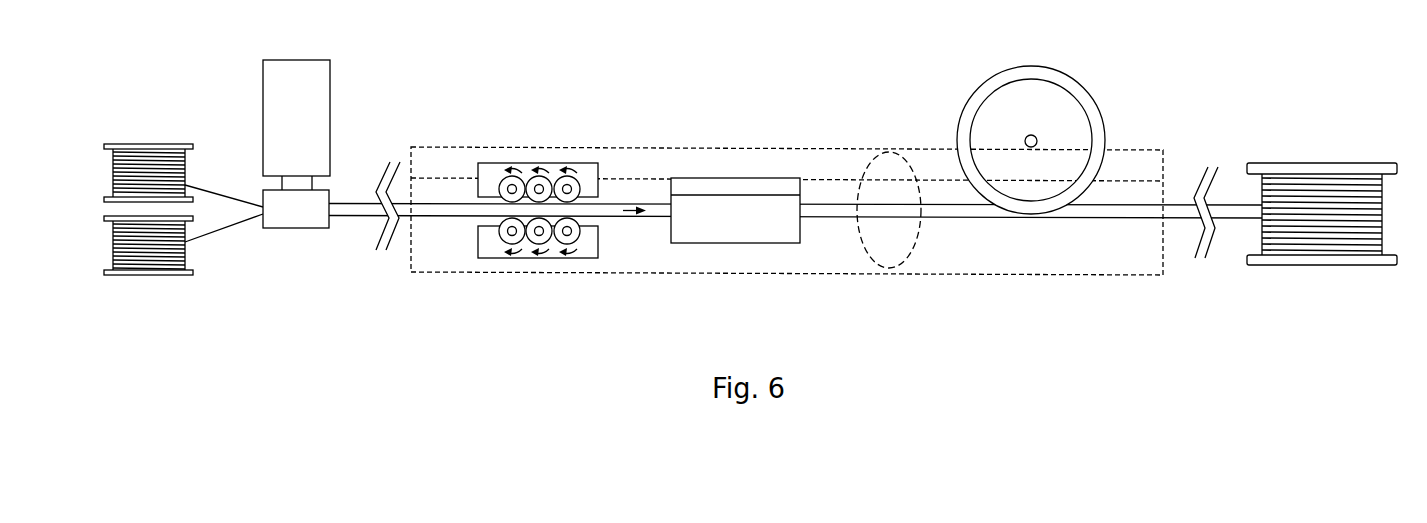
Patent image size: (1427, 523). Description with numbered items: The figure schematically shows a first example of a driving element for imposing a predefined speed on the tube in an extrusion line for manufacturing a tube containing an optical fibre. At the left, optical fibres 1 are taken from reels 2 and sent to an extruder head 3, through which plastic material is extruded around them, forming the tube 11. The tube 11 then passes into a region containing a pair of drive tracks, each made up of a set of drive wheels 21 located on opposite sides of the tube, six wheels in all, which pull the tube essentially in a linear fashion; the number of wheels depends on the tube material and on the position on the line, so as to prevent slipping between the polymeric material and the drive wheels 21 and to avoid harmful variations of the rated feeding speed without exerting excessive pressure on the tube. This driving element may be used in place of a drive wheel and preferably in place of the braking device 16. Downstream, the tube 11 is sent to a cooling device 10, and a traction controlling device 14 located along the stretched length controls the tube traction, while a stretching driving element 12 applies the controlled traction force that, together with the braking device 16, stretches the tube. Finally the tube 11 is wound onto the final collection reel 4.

The optical fibre 1 is at (196, 185).
The reel 2 is at (145, 147).
The extruder head 3 is at (317, 218).
The final collection reel 4 is at (1303, 192).
The cooling device 10 is at (795, 233).
The tube 11 is at (349, 193).
The stretching driving element 12 is at (1045, 105).
The traction controlling device 14 is at (883, 153).
The braking device 16 is at (490, 252).
The drive wheels 21 is at (513, 186).